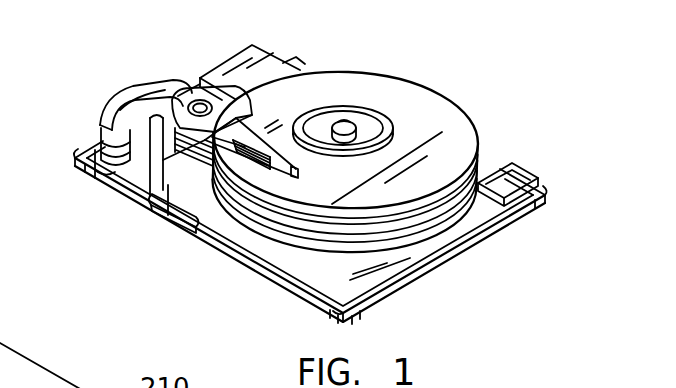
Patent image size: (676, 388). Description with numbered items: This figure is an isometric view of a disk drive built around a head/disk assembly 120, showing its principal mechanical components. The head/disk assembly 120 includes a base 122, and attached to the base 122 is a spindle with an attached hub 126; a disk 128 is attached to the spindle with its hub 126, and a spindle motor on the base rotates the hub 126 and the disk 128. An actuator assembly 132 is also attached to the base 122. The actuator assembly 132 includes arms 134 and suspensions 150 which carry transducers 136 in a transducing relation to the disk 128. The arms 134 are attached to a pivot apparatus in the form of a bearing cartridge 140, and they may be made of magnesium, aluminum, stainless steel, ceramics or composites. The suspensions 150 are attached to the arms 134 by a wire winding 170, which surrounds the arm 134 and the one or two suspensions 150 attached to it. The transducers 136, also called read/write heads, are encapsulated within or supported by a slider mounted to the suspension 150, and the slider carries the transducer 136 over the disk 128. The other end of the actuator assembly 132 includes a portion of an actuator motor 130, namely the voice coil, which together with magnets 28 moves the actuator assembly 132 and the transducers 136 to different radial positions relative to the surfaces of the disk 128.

The head/disk assembly 120 is at (449, 62).
The base 122 is at (360, 286).
The hub 126 is at (350, 128).
The disk 128 is at (458, 118).
The actuator motor 130 is at (137, 85).
The magnet 28 is at (127, 113).
The actuator assembly 132 is at (160, 163).
The bearing cartridge 140 is at (200, 106).
The arm 134 is at (235, 98).
The wire winding 170 is at (296, 78).
The suspension 150 is at (280, 163).
The transducer 136 is at (287, 177).